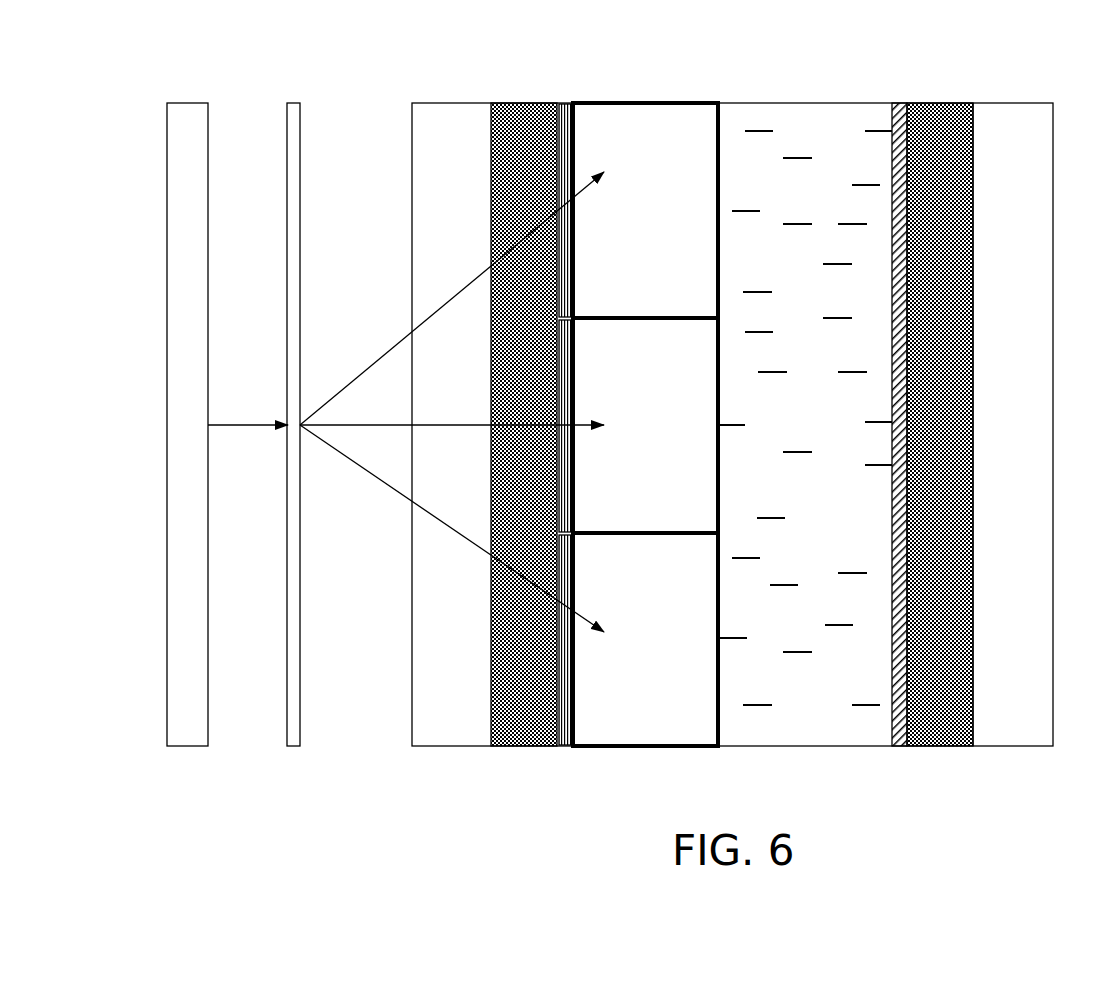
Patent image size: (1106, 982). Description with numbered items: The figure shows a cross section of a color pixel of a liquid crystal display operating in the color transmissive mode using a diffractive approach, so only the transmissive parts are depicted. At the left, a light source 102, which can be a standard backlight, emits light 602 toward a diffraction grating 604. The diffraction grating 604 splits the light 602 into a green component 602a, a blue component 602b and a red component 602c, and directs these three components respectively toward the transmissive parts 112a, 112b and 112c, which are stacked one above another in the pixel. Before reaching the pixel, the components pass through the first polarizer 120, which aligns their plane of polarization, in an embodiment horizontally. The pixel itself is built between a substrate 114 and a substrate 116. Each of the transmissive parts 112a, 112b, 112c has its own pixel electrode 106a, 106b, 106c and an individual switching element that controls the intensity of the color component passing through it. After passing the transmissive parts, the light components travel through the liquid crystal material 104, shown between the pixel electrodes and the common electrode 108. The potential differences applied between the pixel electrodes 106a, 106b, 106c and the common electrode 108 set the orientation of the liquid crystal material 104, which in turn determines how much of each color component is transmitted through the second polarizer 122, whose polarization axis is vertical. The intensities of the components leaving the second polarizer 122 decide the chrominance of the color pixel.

The light source 102 is at (187, 746).
The diffraction grating 604 is at (292, 746).
The light 602 is at (250, 427).
The green component 602a is at (345, 388).
The blue component 602b is at (331, 427).
The red component 602c is at (345, 462).
The first polarizer 120 is at (452, 104).
The second polarizer 122 is at (1013, 104).
The substrate 114 is at (518, 103).
The pixel electrode 106a is at (565, 103).
The pixel electrode 106b is at (572, 384).
The pixel electrode 106c is at (565, 735).
The transmissive part 112a is at (675, 228).
The transmissive part 112b is at (675, 459).
The transmissive part 112c is at (675, 647).
The liquid crystal material 104 is at (826, 118).
The common electrode 108 is at (902, 746).
The substrate 116 is at (933, 103).